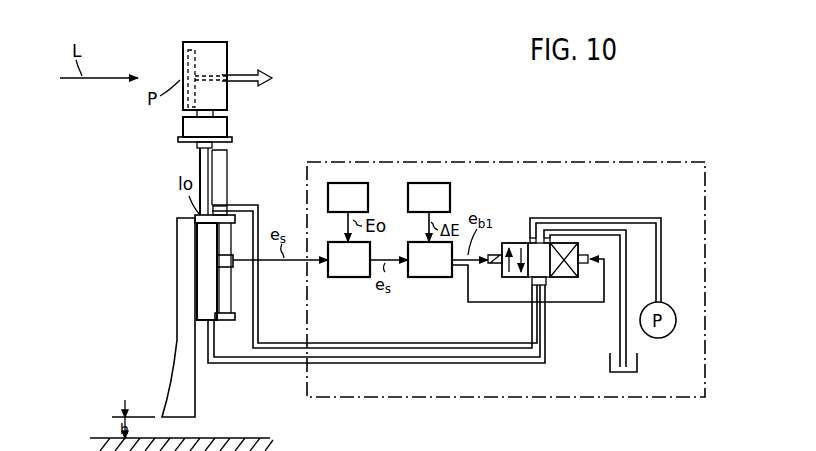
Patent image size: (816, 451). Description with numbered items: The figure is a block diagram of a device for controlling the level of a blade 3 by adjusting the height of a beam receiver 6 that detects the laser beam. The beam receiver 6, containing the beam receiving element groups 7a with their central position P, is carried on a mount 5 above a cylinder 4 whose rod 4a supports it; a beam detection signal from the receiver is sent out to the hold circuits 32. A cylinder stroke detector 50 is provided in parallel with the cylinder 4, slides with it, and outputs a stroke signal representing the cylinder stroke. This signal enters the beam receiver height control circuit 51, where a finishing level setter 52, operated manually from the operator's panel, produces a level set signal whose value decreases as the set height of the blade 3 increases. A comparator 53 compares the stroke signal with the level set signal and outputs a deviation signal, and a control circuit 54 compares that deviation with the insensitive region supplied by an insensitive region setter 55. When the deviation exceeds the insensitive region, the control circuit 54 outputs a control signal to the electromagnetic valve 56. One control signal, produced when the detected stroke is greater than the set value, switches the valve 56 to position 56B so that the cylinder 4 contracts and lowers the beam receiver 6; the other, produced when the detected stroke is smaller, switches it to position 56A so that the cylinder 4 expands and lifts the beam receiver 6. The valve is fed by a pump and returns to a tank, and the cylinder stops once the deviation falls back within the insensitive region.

The blade 3 is at (165, 339).
The cylinder 4 is at (216, 322).
The piston rod 4a is at (200, 178).
The mount base 5 is at (183, 130).
The beam receiver 6 is at (204, 39).
The beam receiving element group 7a is at (185, 62).
The hold circuits 32 is at (305, 75).
The cylinder stroke detector 50 is at (237, 206).
The beam receiver height control circuit 51 is at (432, 162).
The finishing level setter 52 is at (368, 190).
The comparator 53 is at (344, 278).
The control circuit 54 is at (429, 278).
The insensitive region setter 55 is at (454, 195).
The electromagnetic valve 56 is at (545, 242).
The valve position A 56A is at (563, 280).
The valve position B 56B is at (513, 240).